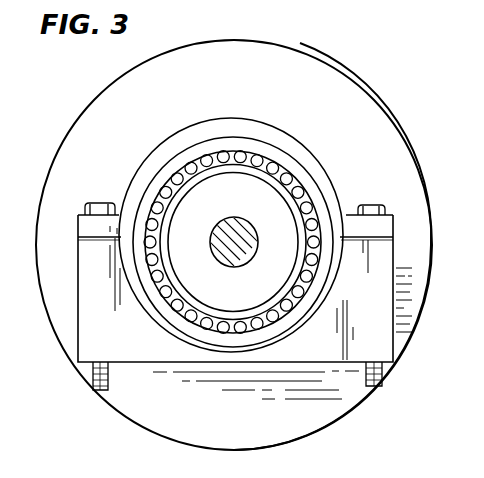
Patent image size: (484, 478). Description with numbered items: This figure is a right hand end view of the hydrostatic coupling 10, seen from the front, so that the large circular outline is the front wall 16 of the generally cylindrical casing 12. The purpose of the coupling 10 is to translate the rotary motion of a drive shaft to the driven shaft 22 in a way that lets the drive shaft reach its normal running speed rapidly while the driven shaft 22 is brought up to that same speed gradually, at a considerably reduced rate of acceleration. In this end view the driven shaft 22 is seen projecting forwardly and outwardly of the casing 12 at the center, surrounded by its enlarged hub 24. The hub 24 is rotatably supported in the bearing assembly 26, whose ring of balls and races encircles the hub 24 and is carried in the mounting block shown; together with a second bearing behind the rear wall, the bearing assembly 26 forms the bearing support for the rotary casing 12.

The hydrostatic coupling 10 is at (394, 108).
The casing 12 is at (87, 107).
The front wall 16 is at (327, 87).
The driven shaft 22 is at (238, 257).
The enlarged hub 24 is at (274, 202).
The bearing assembly 26 is at (247, 152).